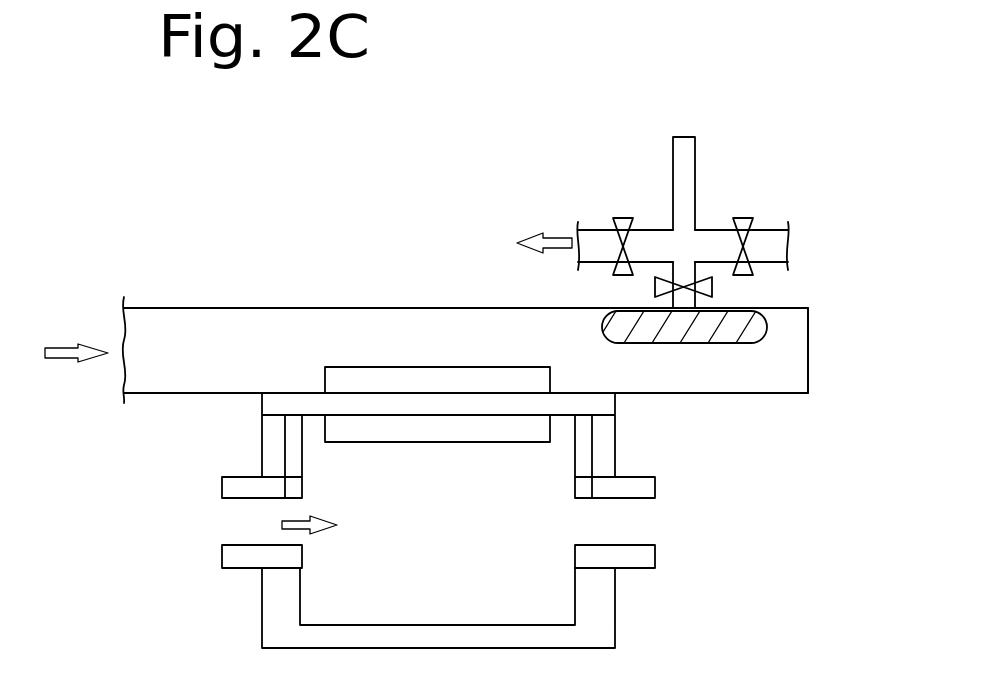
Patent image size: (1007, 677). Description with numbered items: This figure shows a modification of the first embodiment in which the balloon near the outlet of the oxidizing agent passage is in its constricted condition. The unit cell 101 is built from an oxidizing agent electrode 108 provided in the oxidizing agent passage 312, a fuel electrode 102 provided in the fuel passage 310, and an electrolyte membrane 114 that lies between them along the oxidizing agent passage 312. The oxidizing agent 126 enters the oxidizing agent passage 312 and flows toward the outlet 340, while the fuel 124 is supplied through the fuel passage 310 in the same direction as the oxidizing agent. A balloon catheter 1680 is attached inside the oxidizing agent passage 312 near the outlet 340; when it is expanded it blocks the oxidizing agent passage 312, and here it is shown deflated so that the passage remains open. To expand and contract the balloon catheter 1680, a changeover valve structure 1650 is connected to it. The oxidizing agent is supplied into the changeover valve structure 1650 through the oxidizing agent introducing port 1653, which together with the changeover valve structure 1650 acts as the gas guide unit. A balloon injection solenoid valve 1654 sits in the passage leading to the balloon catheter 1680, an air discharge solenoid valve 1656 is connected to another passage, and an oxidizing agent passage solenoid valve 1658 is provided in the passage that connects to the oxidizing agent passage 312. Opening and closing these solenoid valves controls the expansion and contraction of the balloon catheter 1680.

The oxidizing agent passage 312 is at (167, 327).
The outlet 340 is at (808, 350).
The oxidizing agent 126 is at (76, 337).
The oxidizing agent electrode 108 is at (397, 383).
The electrolyte membrane 114 is at (307, 403).
The fuel electrode 102 is at (538, 428).
The fuel passage 310 is at (263, 512).
The fuel 124 is at (292, 527).
The unit cell 101 is at (746, 651).
The balloon catheter 1680 is at (727, 337).
The changeover valve structure 1650 is at (778, 128).
The oxidizing agent introducing port 1653 is at (682, 136).
The oxidizing agent passage solenoid valve 1658 is at (623, 219).
The air discharge solenoid valve 1656 is at (741, 219).
The balloon injection solenoid valve 1654 is at (655, 287).